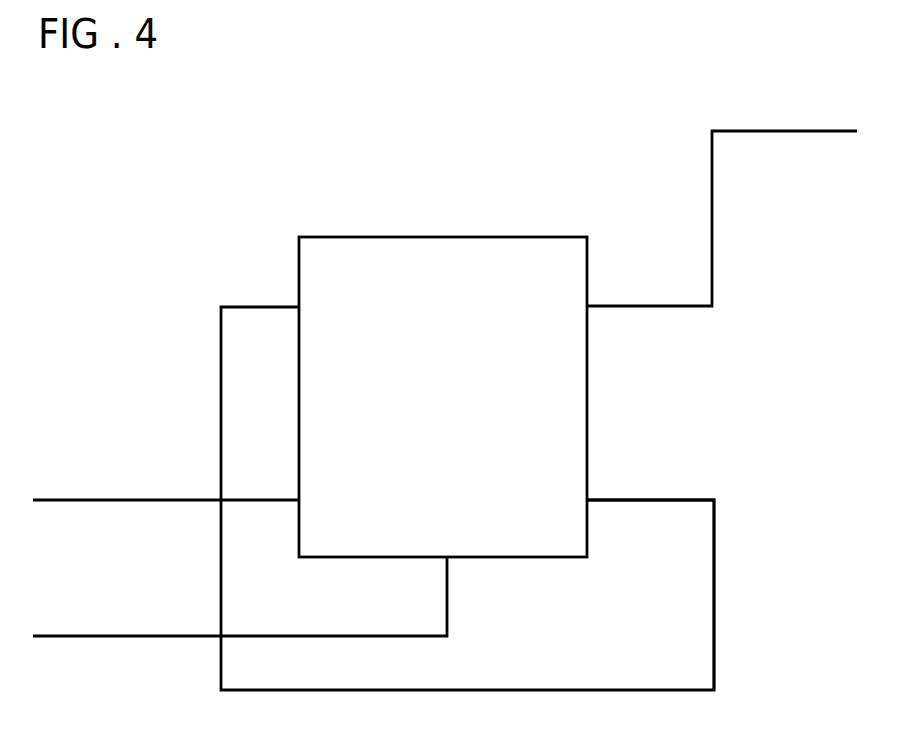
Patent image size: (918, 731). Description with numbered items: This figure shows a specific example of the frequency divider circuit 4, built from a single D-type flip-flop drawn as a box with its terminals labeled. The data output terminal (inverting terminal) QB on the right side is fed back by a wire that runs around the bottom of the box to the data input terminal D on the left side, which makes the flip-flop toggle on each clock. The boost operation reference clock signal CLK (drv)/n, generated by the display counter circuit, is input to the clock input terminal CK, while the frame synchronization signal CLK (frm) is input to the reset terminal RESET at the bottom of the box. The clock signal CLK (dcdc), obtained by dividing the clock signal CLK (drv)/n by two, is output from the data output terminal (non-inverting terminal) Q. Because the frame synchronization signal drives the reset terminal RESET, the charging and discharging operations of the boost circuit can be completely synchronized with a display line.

The frequency divider circuit 4 is at (513, 236).
The data input terminal D is at (467, 491).
The data output terminal (non-inverting terminal) Q is at (710, 210).
The data output terminal (inverting terminal) QB is at (633, 591).
The clock input terminal CK is at (187, 495).
The reset terminal RESET is at (255, 578).